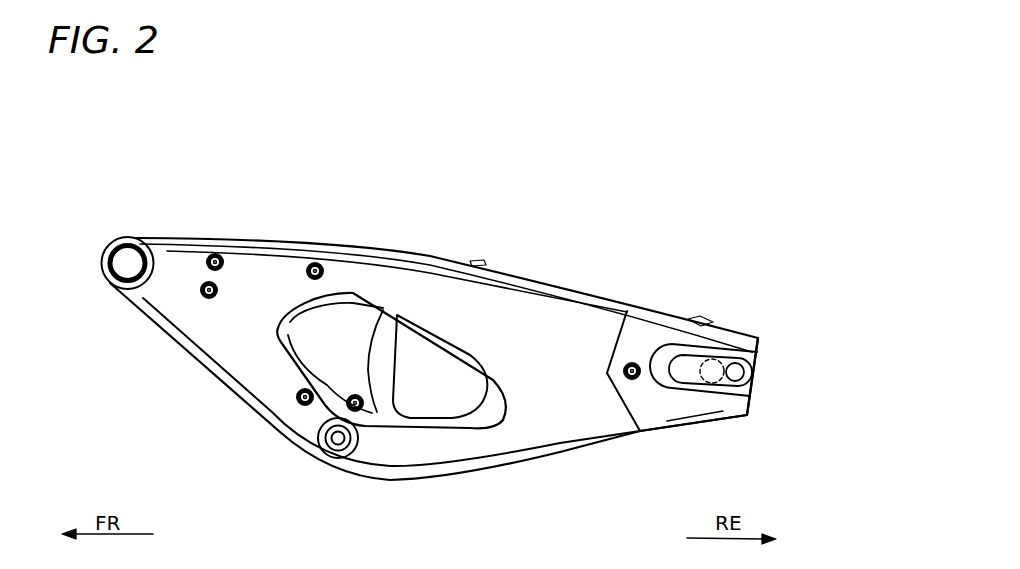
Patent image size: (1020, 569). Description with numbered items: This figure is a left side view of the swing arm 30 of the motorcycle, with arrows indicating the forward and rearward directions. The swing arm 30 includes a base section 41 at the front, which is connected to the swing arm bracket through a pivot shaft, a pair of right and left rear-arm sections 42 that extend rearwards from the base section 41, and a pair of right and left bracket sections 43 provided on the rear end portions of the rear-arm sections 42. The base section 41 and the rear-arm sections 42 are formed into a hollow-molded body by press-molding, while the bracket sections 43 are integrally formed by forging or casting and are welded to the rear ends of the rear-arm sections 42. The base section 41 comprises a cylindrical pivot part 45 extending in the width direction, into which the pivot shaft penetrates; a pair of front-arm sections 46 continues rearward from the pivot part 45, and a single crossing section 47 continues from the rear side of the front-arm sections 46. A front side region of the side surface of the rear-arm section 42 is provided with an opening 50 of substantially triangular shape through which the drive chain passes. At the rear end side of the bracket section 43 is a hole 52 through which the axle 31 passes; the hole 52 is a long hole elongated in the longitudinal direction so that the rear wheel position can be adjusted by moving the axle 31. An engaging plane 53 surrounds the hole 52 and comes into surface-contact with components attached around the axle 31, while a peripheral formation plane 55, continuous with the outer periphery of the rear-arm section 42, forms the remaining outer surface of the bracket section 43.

The swing arm 30 is at (498, 174).
The axle 31 is at (700, 382).
The base section 41 is at (165, 345).
The rear-arm sections 42 is at (558, 284).
The bracket sections 43 is at (712, 425).
The pivot part 45 is at (123, 237).
The front-arm sections 46 is at (263, 270).
The crossing section 47 is at (339, 275).
The opening 50 is at (446, 409).
The hole 52 is at (760, 377).
The engaging plane 53 is at (722, 350).
The peripheral formation plane 55 is at (647, 338).